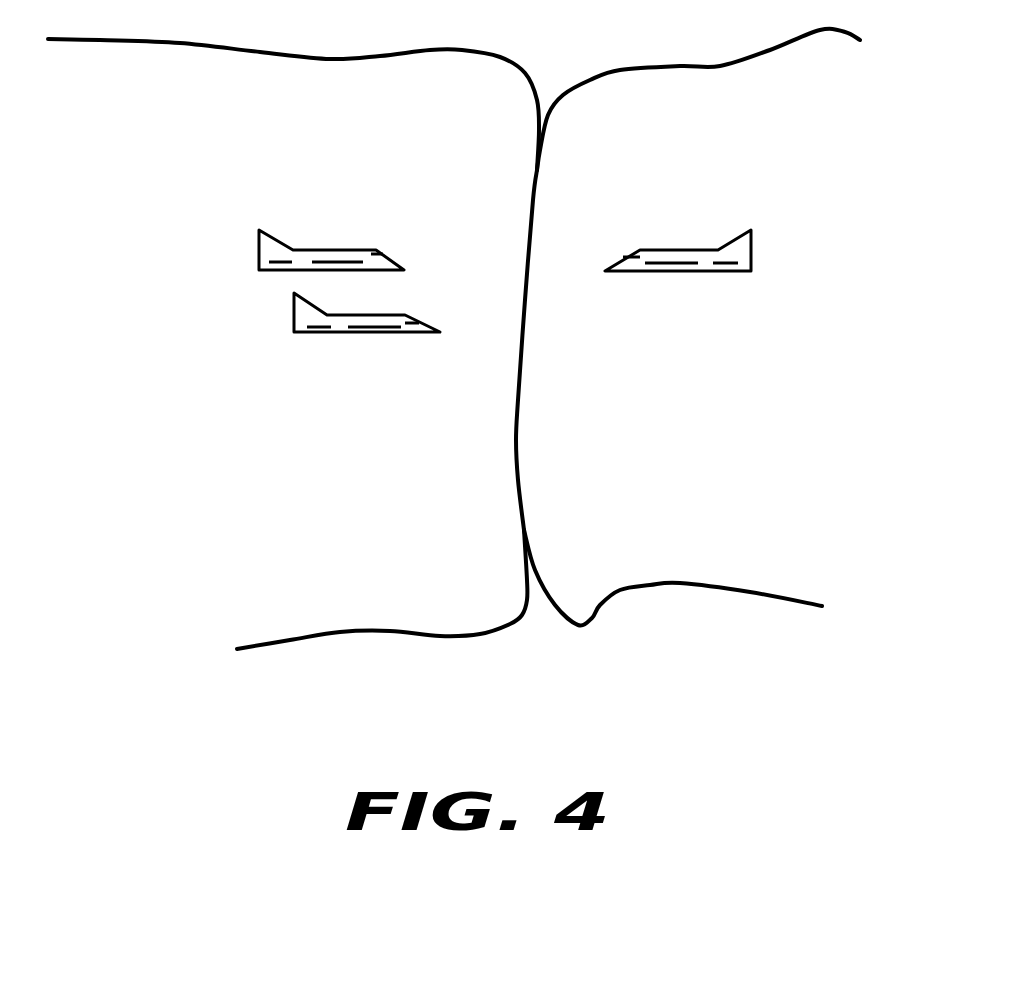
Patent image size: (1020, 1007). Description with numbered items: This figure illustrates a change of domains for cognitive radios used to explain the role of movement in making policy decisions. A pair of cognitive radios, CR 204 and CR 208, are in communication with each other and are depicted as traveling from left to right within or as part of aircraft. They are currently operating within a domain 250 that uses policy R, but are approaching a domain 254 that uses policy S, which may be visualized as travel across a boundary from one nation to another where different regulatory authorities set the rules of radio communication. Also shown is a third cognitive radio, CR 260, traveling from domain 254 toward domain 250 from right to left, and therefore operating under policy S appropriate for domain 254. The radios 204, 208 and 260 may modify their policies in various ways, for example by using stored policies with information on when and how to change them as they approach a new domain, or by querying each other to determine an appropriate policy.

The domain 250 is at (97, 236).
The domain 254 is at (758, 473).
The cognitive radio 204 is at (268, 272).
The cognitive radio 208 is at (305, 335).
The third cognitive radio 260 is at (733, 272).